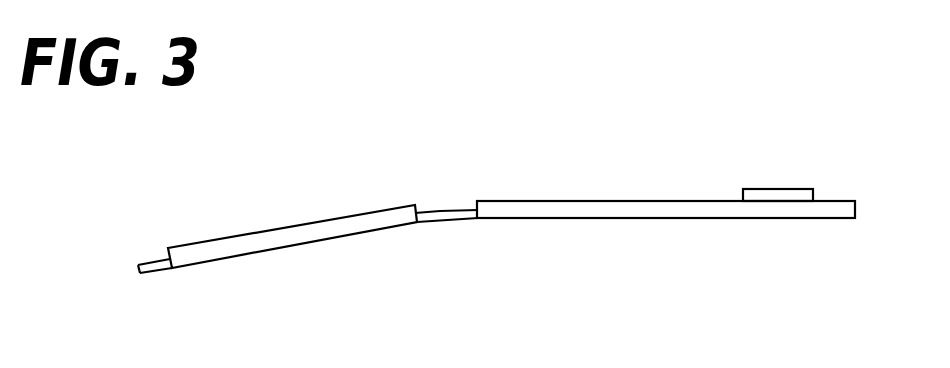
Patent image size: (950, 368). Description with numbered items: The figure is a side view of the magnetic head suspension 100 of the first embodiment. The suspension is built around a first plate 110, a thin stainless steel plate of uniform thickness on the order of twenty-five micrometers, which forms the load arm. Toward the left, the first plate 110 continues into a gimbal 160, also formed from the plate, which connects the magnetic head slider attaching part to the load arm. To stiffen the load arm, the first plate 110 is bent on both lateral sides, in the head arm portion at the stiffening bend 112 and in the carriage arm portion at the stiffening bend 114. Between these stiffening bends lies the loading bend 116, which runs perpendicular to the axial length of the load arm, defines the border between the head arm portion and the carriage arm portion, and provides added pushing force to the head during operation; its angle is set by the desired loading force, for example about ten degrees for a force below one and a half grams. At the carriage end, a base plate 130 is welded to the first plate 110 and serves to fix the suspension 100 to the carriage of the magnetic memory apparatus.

The magnetic head suspension 100 is at (376, 288).
The first plate 110 is at (426, 224).
The stiffening bend in head arm portion 112 is at (309, 225).
The stiffening bend in carriage arm portion 114 is at (603, 212).
The loading bend 116 is at (456, 212).
The base plate 130 is at (785, 198).
The gimbal 160 is at (158, 280).